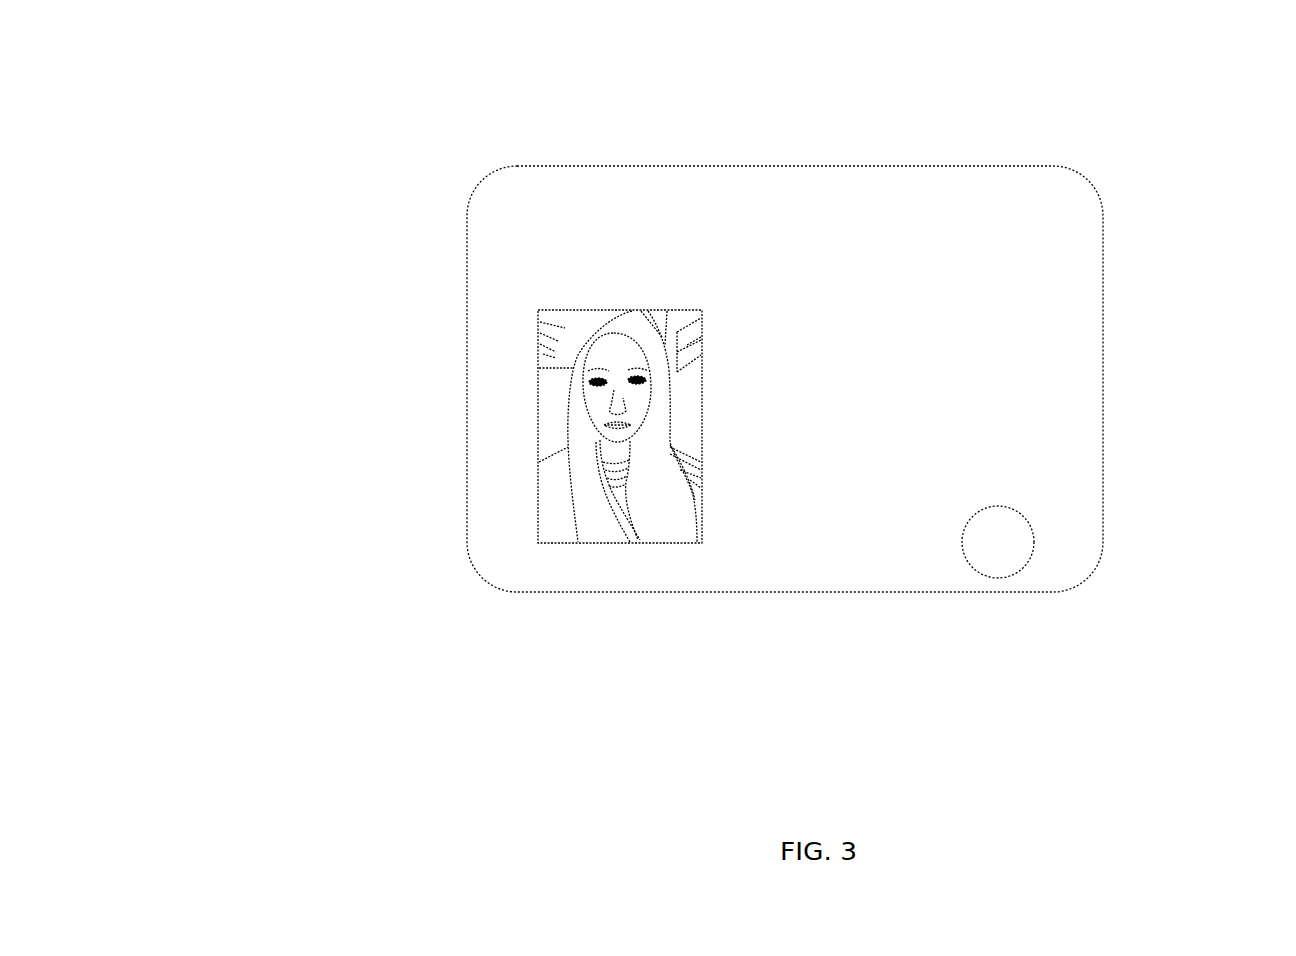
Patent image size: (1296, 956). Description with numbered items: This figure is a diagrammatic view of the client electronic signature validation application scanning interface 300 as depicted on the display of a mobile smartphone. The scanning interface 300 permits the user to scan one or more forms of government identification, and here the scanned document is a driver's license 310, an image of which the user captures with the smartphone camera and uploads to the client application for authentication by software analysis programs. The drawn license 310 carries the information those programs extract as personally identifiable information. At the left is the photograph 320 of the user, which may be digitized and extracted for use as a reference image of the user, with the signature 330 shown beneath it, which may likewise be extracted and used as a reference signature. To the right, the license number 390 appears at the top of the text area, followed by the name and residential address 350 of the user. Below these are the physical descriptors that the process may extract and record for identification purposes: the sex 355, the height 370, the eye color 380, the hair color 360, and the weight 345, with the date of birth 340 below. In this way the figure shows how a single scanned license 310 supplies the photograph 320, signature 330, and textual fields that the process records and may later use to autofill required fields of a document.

The scanning interface 300 is at (333, 48).
The driver's license 310 is at (1033, 167).
The photograph 320 is at (580, 547).
The signature 330 is at (622, 582).
The date of birth 340 is at (1005, 492).
The weight field 345 is at (948, 452).
The residential address 350 is at (963, 378).
The sex 355 is at (792, 428).
The hair color 360 is at (962, 418).
The height 370 is at (782, 465).
The eye color 380 is at (775, 500).
The driving license number 390 is at (792, 298).